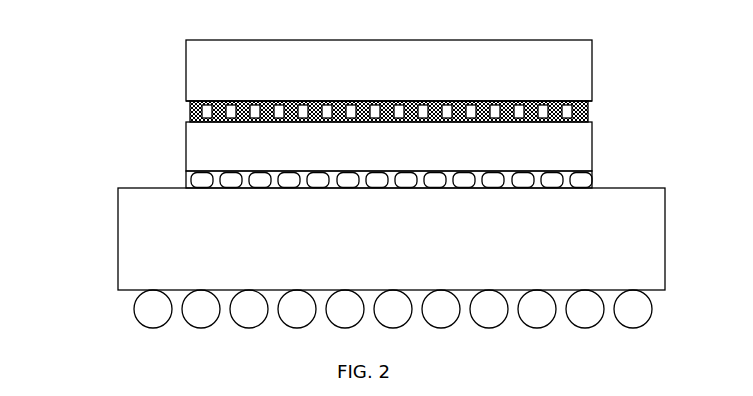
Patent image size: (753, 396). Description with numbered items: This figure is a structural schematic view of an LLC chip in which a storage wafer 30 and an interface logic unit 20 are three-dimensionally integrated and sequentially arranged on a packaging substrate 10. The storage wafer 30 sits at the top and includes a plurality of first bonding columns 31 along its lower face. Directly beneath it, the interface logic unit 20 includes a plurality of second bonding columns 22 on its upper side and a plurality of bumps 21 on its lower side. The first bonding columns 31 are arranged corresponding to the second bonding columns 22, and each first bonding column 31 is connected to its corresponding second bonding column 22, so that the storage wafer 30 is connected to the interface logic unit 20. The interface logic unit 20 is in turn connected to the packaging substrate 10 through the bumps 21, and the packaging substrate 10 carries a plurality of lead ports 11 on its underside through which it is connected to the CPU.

The packaging substrate 10 is at (118, 245).
The lead ports 11 is at (134, 308).
The interface logic unit 20 is at (592, 150).
The bumps 21 is at (187, 181).
The second bonding columns 22 is at (190, 114).
The storage wafer 30 is at (186, 68).
The first bonding columns 31 is at (588, 112).